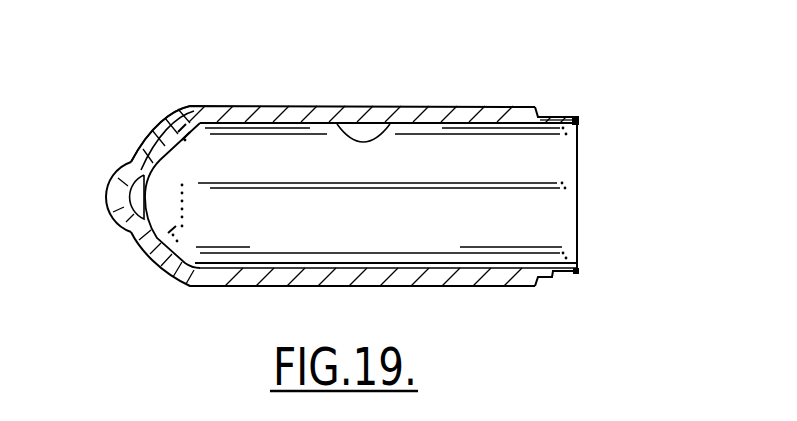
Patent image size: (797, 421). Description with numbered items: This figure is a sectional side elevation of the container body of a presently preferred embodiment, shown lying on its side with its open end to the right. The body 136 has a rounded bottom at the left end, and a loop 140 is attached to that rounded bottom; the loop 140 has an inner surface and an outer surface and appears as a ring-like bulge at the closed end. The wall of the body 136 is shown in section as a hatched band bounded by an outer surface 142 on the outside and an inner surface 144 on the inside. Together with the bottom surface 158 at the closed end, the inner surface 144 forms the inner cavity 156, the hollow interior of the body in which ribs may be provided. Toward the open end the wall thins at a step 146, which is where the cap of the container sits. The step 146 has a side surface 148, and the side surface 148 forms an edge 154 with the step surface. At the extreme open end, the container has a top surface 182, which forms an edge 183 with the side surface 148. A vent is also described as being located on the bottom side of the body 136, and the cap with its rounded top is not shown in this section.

The body 136 is at (386, 302).
The loop 140 is at (110, 160).
The outer surface 142 is at (497, 290).
The inner surface 144 is at (413, 97).
The step 146 is at (541, 117).
The side surface 148 is at (574, 120).
The edge 154 is at (541, 118).
The inner cavity 156 is at (358, 241).
The bottom surface 158 is at (212, 120).
The top surface 182 is at (578, 271).
The edge 183 is at (578, 272).